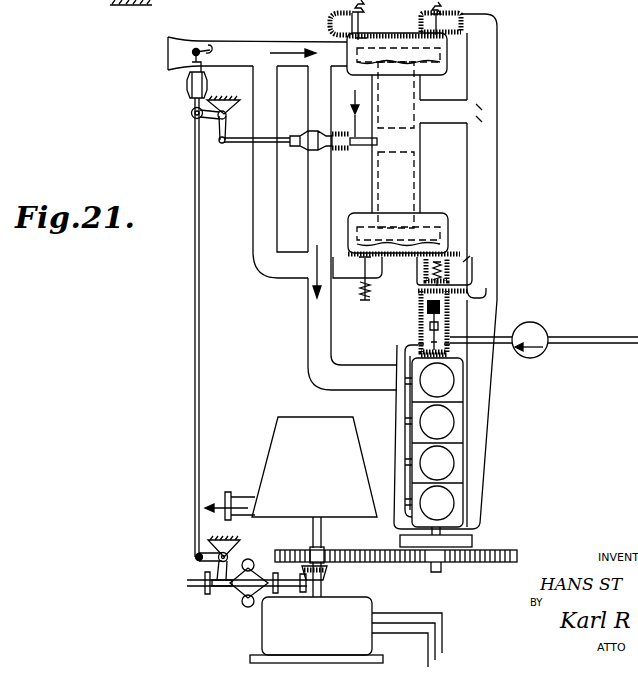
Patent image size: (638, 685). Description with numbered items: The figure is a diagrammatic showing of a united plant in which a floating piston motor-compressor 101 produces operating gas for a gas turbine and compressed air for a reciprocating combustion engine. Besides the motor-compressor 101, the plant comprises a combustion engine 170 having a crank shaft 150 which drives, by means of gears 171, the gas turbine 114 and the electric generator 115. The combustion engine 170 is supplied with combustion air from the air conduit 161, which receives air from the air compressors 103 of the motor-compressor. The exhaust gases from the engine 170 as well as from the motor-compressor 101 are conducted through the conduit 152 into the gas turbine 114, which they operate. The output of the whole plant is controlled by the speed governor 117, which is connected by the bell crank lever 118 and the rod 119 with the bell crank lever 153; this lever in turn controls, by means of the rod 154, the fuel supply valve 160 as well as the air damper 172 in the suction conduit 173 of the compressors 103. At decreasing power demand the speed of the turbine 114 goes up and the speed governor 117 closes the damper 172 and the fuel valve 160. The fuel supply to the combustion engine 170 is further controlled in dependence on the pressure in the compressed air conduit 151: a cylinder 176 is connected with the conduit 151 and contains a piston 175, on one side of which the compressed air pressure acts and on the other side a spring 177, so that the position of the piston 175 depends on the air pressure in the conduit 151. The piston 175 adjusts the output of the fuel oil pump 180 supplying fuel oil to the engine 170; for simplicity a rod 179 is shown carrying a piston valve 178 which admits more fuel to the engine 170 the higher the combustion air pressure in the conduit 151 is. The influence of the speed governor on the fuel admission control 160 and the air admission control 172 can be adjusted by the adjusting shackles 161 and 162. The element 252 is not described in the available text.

The motor-compressor 101 is at (372, 86).
The air compressors 103 is at (410, 262).
The gas turbine 114 is at (291, 490).
The electric generator 115 is at (262, 630).
The speed governor 117 is at (243, 603).
The bell crank lever 118 is at (198, 558).
The rod 119 is at (195, 280).
The crank shaft 150 is at (433, 572).
The compressed air conduit 151 is at (497, 96).
The conduit 152 is at (308, 305).
The bell crank lever 153 is at (205, 123).
The rod 154 is at (240, 148).
The fuel supply valve 160 is at (343, 133).
The air conduit 161 is at (312, 150).
The adjusting shackle 162 is at (188, 84).
The combustion engine 170 is at (465, 436).
The gears 171 is at (362, 562).
The air damper 172 is at (222, 38).
The suction conduit 173 is at (231, 60).
The piston 175 is at (424, 307).
The cylinder 176 is at (465, 287).
The spring 177 is at (424, 320).
The piston valve 178 is at (448, 350).
The rod 179 is at (448, 320).
The fuel oil pump 180 is at (549, 332).
The conduit 252 is at (67, 1).